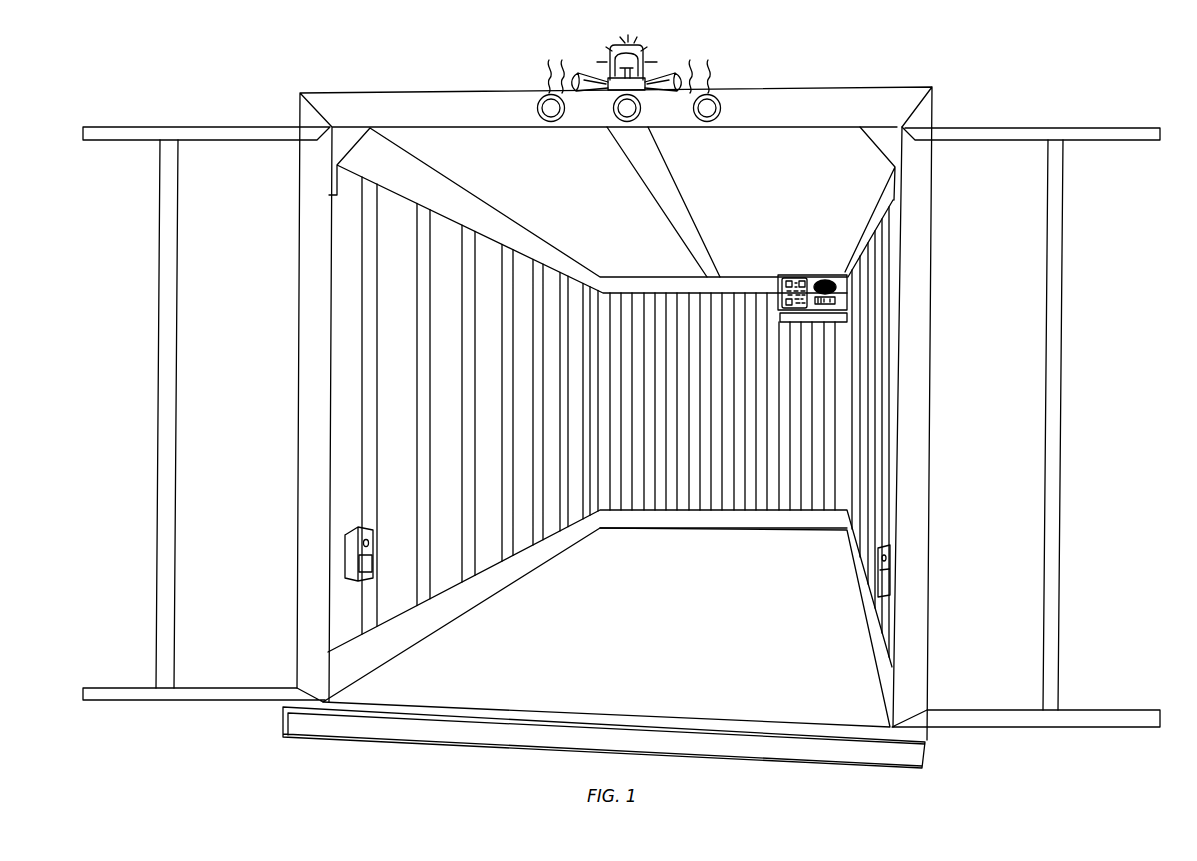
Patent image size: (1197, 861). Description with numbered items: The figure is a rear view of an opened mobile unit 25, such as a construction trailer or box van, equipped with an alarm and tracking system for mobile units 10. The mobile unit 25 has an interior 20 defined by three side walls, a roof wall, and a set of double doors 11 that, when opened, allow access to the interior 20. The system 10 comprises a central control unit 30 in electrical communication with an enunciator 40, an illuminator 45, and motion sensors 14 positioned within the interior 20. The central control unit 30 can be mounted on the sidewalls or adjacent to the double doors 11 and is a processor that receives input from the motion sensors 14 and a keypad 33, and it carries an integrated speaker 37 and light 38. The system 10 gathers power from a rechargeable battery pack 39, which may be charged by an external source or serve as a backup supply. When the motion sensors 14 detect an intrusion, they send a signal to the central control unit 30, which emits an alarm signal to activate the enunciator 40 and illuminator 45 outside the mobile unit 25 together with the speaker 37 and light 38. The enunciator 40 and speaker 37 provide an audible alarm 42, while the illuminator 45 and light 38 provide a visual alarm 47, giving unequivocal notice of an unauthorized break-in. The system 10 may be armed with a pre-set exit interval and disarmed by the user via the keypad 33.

The alarm and tracking system for mobile units 10 is at (982, 107).
The double doors 11 is at (243, 137).
The motion sensors 14 is at (372, 562).
The interior 20 is at (600, 652).
The mobile unit 25 is at (943, 742).
The central control unit 30 is at (793, 278).
The keypad 33 is at (781, 292).
The speaker 37 is at (825, 280).
The light 38 is at (835, 300).
The rechargeable battery pack 39 is at (840, 318).
The enunciator 40 is at (570, 72).
The audible alarm 42 is at (544, 73).
The illuminator 45 is at (627, 60).
The visual alarm 47 is at (620, 47).